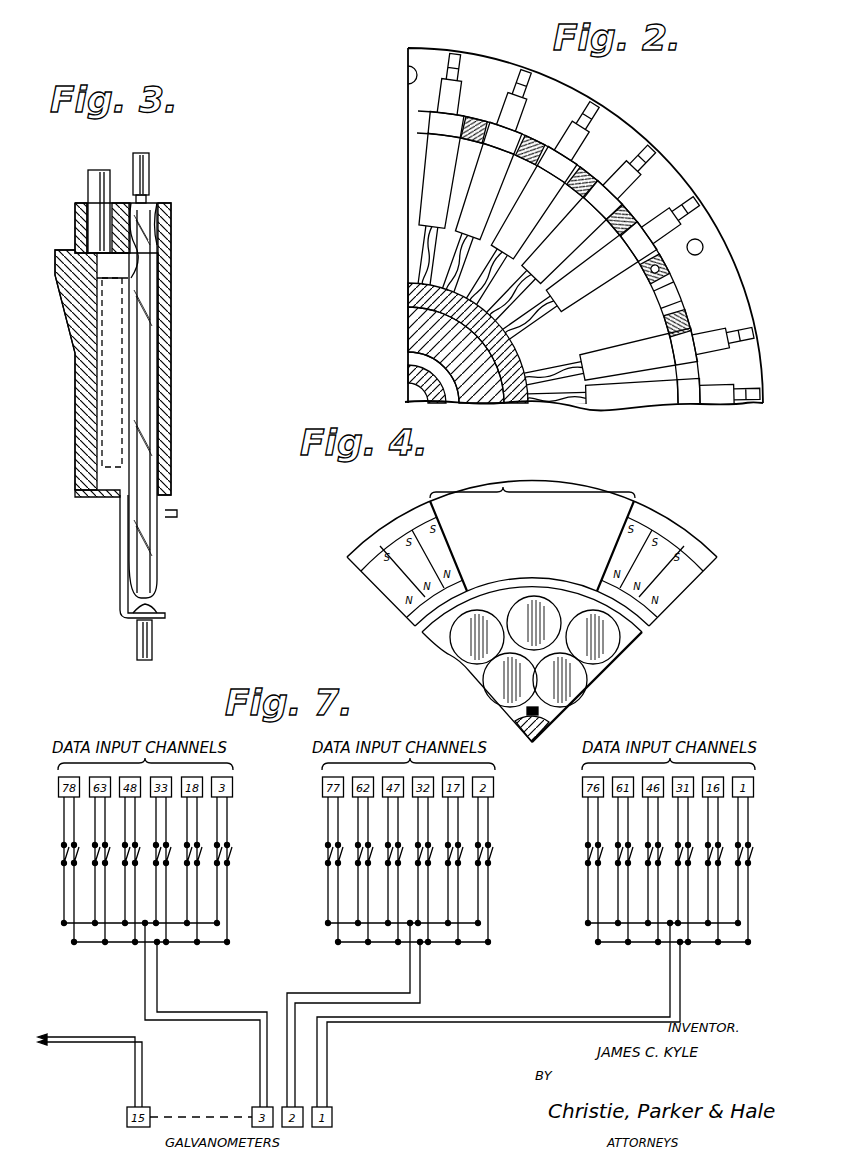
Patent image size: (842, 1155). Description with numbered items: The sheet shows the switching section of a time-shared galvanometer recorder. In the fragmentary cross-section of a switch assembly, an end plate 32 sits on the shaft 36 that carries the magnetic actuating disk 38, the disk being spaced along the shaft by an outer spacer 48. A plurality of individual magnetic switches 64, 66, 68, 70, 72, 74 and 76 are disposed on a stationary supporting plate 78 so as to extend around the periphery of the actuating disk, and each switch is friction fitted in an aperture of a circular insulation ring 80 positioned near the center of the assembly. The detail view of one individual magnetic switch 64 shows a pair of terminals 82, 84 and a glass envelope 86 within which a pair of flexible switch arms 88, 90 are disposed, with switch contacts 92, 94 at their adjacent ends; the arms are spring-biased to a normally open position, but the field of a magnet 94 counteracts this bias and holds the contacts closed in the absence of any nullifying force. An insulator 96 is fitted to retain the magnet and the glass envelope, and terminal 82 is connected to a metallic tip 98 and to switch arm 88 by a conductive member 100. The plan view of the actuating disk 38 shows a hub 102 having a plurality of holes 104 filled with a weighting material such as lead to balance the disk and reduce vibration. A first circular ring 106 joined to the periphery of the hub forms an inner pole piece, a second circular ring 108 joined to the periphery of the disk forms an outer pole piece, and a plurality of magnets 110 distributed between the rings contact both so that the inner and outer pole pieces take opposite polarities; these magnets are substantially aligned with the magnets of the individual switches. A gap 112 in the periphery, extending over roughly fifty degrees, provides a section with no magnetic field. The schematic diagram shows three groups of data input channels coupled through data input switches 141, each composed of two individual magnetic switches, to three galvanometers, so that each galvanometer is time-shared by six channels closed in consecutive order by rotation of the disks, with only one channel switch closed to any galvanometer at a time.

In FIG. 2, the end plate 32 is at (490, 398).
In FIG. 2, the shaft 36 is at (411, 393).
In FIG. 4, the shaft 36 is at (552, 727).
In FIG. 4, the magnetic actuating disk 38 is at (684, 520).
In FIG. 2, the outer spacer 48 is at (452, 398).
In FIG. 3, the individual magnetic switch 64 is at (172, 240).
In FIG. 2, the individual magnetic switch 64 is at (457, 92).
In FIG. 2, the individual magnetic switch 66 is at (523, 118).
In FIG. 2, the individual magnetic switch 68 is at (581, 137).
In FIG. 2, the individual magnetic switch 70 is at (631, 180).
In FIG. 2, the individual magnetic switch 72 is at (674, 232).
In FIG. 2, the individual magnetic switch 74 is at (716, 334).
In FIG. 2, the individual magnetic switch 76 is at (726, 404).
In FIG. 2, the stationary supporting plate 78 is at (742, 278).
In FIG. 2, the circular insulation ring 80 is at (527, 398).
In FIG. 3, the terminal 82 is at (88, 178).
In FIG. 3, the terminal 84 is at (150, 162).
In FIG. 3, the glass envelope 86 is at (177, 514).
In FIG. 3, the flexible switch arm 88 is at (140, 300).
In FIG. 3, the flexible switch arm 90 is at (148, 456).
In FIG. 3, the switch contact 92 is at (146, 410).
In FIG. 3, the switch contact / magnet 94 is at (150, 392).
In FIG. 3, the insulator 96 is at (82, 340).
In FIG. 3, the metallic tip 98 is at (153, 636).
In FIG. 3, the conductive member 100 is at (126, 548).
In FIG. 4, the hub 102 is at (640, 633).
In FIG. 4, the holes 104 is at (597, 620).
In FIG. 4, the first circular ring 106 is at (646, 624).
In FIG. 4, the second circular ring 108 is at (640, 517).
In FIG. 4, the magnets 110 is at (400, 545).
In FIG. 4, the gap 112 is at (532, 482).
In FIG. 7, the data input switches 141 is at (232, 858).